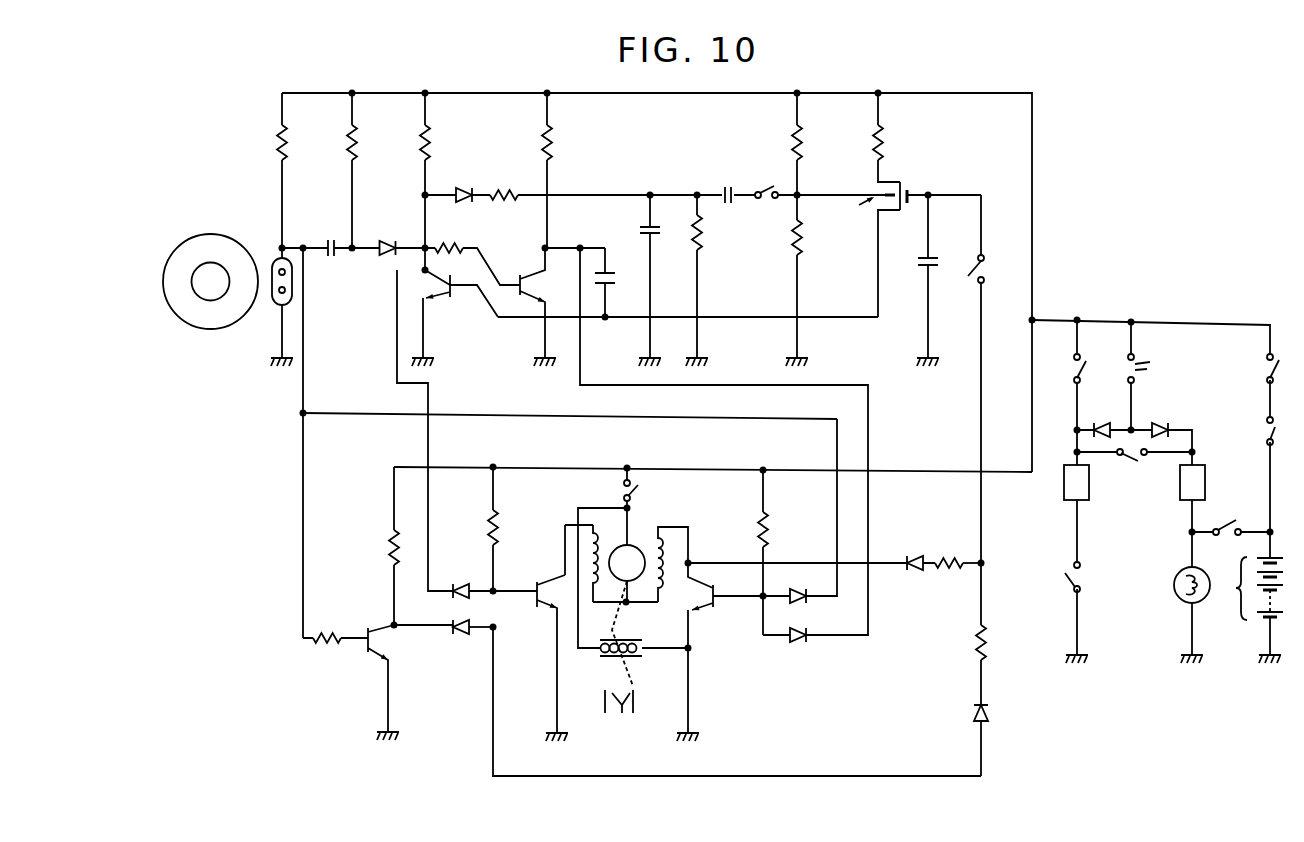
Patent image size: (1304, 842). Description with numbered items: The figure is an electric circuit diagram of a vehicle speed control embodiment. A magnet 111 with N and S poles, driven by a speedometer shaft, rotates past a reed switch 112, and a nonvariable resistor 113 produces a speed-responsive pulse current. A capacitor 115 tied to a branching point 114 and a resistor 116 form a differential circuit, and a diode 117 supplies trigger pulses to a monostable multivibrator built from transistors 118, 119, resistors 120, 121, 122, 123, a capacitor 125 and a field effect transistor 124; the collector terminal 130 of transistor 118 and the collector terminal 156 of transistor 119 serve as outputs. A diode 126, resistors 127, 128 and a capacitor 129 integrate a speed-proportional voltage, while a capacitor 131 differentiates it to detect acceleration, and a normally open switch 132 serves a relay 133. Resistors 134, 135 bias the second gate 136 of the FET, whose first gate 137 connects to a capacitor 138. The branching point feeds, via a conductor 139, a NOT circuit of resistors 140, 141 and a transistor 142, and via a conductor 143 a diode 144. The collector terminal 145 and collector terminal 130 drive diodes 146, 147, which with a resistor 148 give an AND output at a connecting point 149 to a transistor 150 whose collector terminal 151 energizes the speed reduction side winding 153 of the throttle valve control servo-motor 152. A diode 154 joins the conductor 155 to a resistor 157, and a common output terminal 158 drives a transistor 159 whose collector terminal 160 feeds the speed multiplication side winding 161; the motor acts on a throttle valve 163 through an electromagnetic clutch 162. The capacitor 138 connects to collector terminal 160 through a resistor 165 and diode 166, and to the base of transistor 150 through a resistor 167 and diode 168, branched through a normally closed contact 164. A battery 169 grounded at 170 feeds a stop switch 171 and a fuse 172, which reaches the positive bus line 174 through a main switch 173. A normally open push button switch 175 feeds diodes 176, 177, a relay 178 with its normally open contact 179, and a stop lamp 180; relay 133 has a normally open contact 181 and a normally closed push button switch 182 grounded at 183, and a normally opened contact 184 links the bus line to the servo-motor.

The magnet 111 is at (202, 324).
The reed switch 112 is at (275, 303).
The nonvariable resistor 113 is at (285, 138).
The branching point 114 is at (284, 247).
The capacitor 115 is at (331, 258).
The resistor 116 is at (356, 138).
The diode 117 is at (386, 240).
The transistor 118 is at (441, 299).
The transistor 119 is at (538, 268).
The resistor 120 is at (465, 246).
The resistor 121 is at (433, 136).
The resistor 122 is at (556, 143).
The resistor 123 is at (882, 150).
The field effect transistor 124 is at (865, 249).
The capacitor 125 is at (617, 264).
The diode 126 is at (463, 187).
The resistor 127 is at (505, 188).
The resistor 128 is at (705, 232).
The capacitor 129 is at (662, 234).
The collector terminal 130 is at (431, 245).
The capacitor 131 is at (726, 185).
The normally open switch 132 is at (772, 188).
The relay 133 is at (1087, 488).
The resistor 134 is at (810, 133).
The resistor 135 is at (803, 245).
The second gate 136 is at (857, 191).
The first gate 137 is at (917, 193).
The capacitor 138 is at (918, 260).
The conductor 139 is at (305, 471).
The resistor 140 is at (325, 650).
The resistor 141 is at (387, 538).
The transistor 142 is at (376, 654).
The conductor 143 is at (496, 413).
The diode 144 is at (794, 603).
The collector terminal 145 is at (392, 622).
The diode 146 is at (461, 637).
The diode 147 is at (460, 583).
The resistor 148 is at (503, 532).
The connecting point 149 is at (497, 597).
The transistor 150 is at (554, 583).
The collector terminal 151 is at (566, 612).
The throttle valve control servo-motor 152 is at (643, 545).
The speed reduction side winding 153 is at (603, 548).
The diode 154 is at (796, 643).
The conductor 155 is at (822, 386).
The collector terminal 156 is at (549, 243).
The resistor 157 is at (770, 528).
The common output terminal 158 is at (763, 608).
The transistor 159 is at (694, 613).
The collector terminal 160 is at (691, 561).
The speed multiplication side winding 161 is at (668, 590).
The electromagnetic clutch 162 is at (634, 653).
The throttle valve 163 is at (620, 716).
The normally closed contact 164 is at (959, 379).
The resistor 165 is at (952, 557).
The diode 166 is at (913, 572).
The resistor 167 is at (988, 641).
The diode 168 is at (989, 713).
The electric battery 169 is at (1244, 593).
The ground 170 is at (1263, 668).
The stop switch 171 is at (1224, 523).
The fuse 172 is at (1265, 430).
The main switch 173 is at (1265, 375).
The positive bus line 174 is at (723, 470).
The normally open push button switch 175 is at (1158, 376).
The diode 176 is at (1108, 417).
The diode 177 is at (1157, 424).
The relay 178 is at (1177, 483).
The normally open contact 179 is at (1134, 471).
The stop lamp 180 is at (1176, 589).
The normally open contact 181 is at (1095, 375).
The normally closed push button switch 182 is at (1066, 587).
The ground 183 is at (1073, 668).
The normally opened contact 184 is at (635, 488).